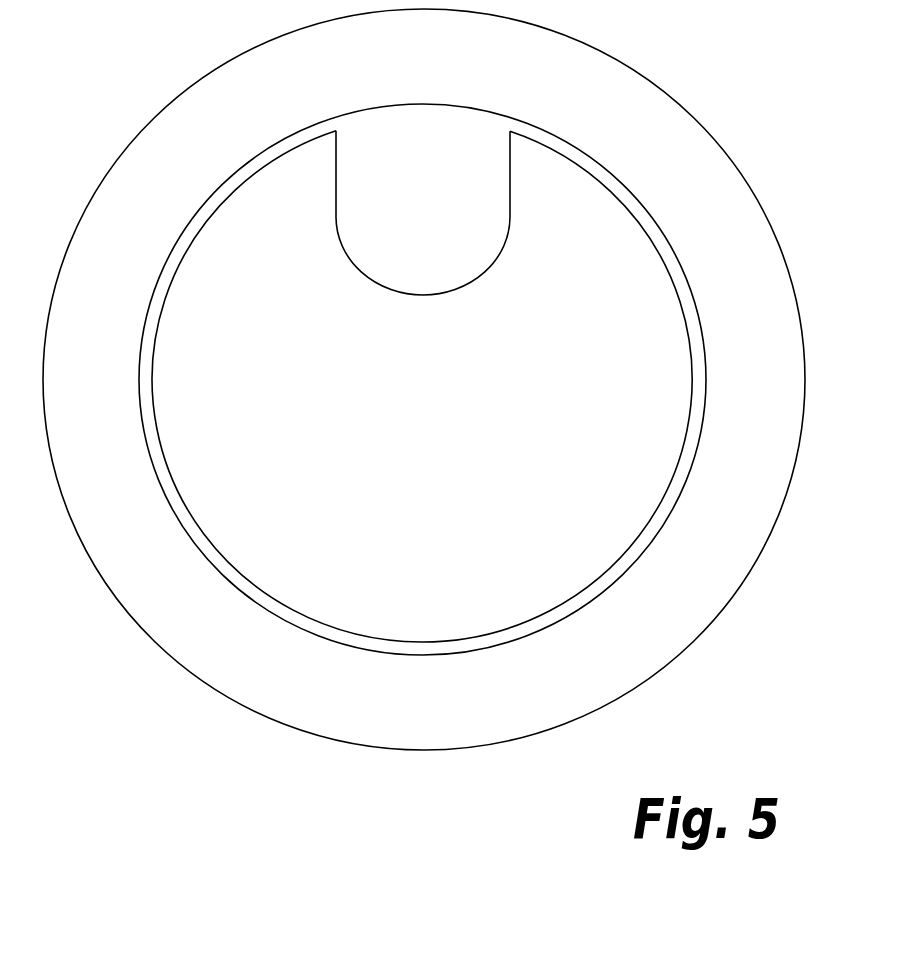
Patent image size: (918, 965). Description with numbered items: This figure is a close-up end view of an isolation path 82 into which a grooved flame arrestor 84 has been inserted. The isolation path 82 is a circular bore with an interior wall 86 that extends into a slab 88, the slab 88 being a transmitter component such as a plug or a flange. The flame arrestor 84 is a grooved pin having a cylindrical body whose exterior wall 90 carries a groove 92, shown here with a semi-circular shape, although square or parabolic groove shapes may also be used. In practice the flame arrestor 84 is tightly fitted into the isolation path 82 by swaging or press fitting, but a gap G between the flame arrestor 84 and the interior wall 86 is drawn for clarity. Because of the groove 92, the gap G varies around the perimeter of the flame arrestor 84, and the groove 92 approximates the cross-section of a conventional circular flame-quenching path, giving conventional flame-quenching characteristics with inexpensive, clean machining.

The isolation path 82 is at (684, 486).
The flame arrestor 84 is at (582, 412).
The interior wall 86 is at (590, 160).
The slab 88 is at (624, 654).
The exterior wall 90 is at (243, 203).
The groove 92 is at (360, 265).
The gap G is at (662, 248).